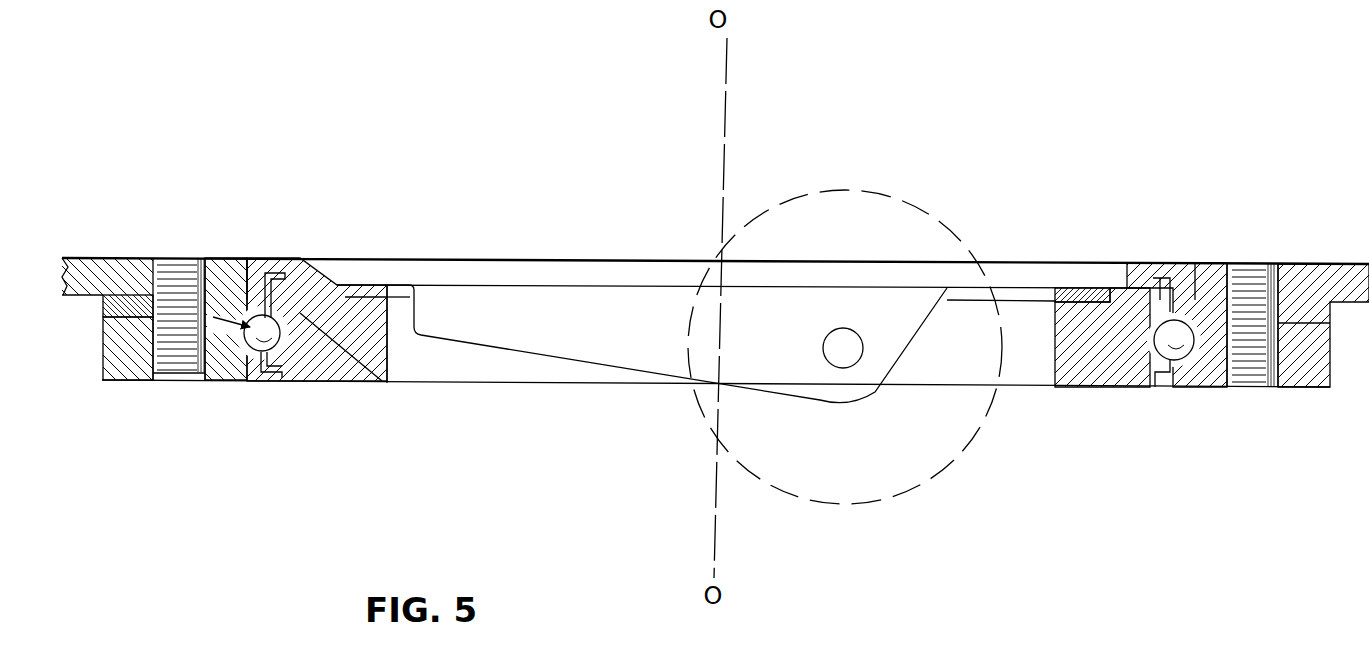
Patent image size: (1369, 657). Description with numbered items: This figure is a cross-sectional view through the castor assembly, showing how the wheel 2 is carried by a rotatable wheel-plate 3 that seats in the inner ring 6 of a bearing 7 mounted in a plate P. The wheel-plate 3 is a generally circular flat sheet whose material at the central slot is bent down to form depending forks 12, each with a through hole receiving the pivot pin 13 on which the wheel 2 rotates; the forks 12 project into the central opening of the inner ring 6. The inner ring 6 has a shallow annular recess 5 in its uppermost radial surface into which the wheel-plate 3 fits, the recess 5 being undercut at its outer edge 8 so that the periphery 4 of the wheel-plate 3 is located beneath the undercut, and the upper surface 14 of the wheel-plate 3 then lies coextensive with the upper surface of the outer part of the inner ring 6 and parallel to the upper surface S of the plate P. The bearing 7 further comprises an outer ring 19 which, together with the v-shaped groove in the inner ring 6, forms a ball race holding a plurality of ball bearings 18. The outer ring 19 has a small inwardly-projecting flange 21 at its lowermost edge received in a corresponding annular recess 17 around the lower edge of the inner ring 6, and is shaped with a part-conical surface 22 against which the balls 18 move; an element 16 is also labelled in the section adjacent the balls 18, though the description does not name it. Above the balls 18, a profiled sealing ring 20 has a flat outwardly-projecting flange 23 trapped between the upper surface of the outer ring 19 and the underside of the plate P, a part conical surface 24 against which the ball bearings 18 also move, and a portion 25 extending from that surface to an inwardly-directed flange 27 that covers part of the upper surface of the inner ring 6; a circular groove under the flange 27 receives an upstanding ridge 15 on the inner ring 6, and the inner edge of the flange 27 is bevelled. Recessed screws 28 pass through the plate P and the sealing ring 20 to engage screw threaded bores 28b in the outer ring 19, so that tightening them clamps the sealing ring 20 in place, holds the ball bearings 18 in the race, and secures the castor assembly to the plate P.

The plate P is at (80, 258).
The upper surface of the plates S is at (125, 254).
The wheel 2 is at (950, 455).
The wheel-plate 3 is at (1026, 280).
The periphery of the wheel-plate 4 is at (1072, 296).
The annular recess 5 is at (383, 275).
The inner ring 6 is at (1070, 372).
The bearing 7 is at (1137, 394).
The outer edge of the recess 8 is at (338, 288).
The depending tabs or forks 12 is at (616, 352).
The pivot pin 13 is at (842, 360).
The upper surface of the wheel-plate 14 is at (588, 254).
The upstanding ridge 15 is at (275, 272).
The cage lower part 16 is at (305, 345).
The annular recess 17 is at (273, 379).
The ball bearings 18 is at (255, 347).
The outer ring 19 is at (102, 362).
The sealing ring 20 is at (300, 268).
The inwardly-projecting flange 21 is at (1173, 388).
The part-conical surface 22 is at (1202, 328).
The outwardly-projecting flange 23 is at (102, 314).
The part conical surface 24 is at (415, 322).
The portion of the sealing ring 25 is at (240, 278).
The inwardly-directed flange 27 is at (1125, 276).
The recessed screws 28 is at (1252, 298).
The screw threaded bores 28b is at (176, 379).